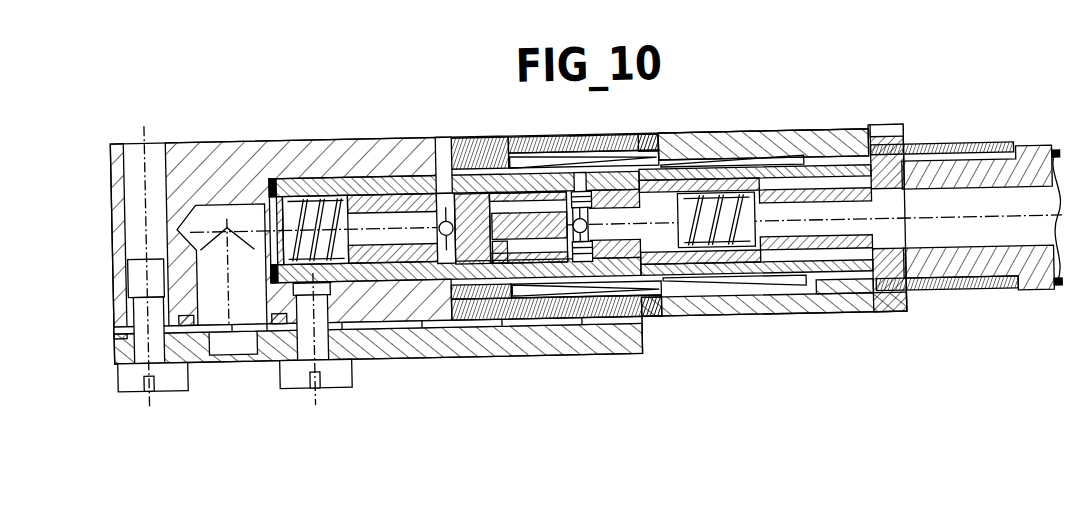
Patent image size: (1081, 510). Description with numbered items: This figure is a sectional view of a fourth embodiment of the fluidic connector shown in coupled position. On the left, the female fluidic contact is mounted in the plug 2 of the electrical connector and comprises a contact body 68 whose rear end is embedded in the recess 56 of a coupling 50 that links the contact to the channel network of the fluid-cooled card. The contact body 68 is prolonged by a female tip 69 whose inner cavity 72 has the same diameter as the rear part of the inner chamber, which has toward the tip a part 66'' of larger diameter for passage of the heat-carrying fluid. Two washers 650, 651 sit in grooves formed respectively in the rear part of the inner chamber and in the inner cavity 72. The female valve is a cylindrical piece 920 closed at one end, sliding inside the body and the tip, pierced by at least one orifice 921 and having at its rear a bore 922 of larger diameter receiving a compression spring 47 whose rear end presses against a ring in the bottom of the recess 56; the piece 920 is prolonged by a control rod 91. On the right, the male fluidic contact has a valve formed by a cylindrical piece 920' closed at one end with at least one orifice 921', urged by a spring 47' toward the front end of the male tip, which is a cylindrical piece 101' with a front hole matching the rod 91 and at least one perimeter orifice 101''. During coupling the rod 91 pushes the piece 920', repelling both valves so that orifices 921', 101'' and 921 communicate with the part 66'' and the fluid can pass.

The coupling 50 is at (231, 143).
The recess 56 is at (292, 172).
The compression spring 47 is at (315, 183).
The bore 922 is at (356, 171).
The contact body 68 is at (385, 189).
The part of larger diameter 66'' is at (436, 182).
The male tip 101' is at (552, 133).
The orifice 101'' is at (561, 183).
The plug 2 is at (582, 136).
The orifice 921' is at (583, 133).
The female tip 69 is at (642, 181).
The inner cavity 72 is at (672, 152).
The cylindrical piece 920' is at (731, 129).
The control rod 91 is at (590, 228).
The washer 651 is at (413, 292).
The orifice 921 is at (378, 356).
The cylindrical piece 920 is at (557, 335).
The washer 650 is at (650, 303).
The spring 47' is at (717, 272).